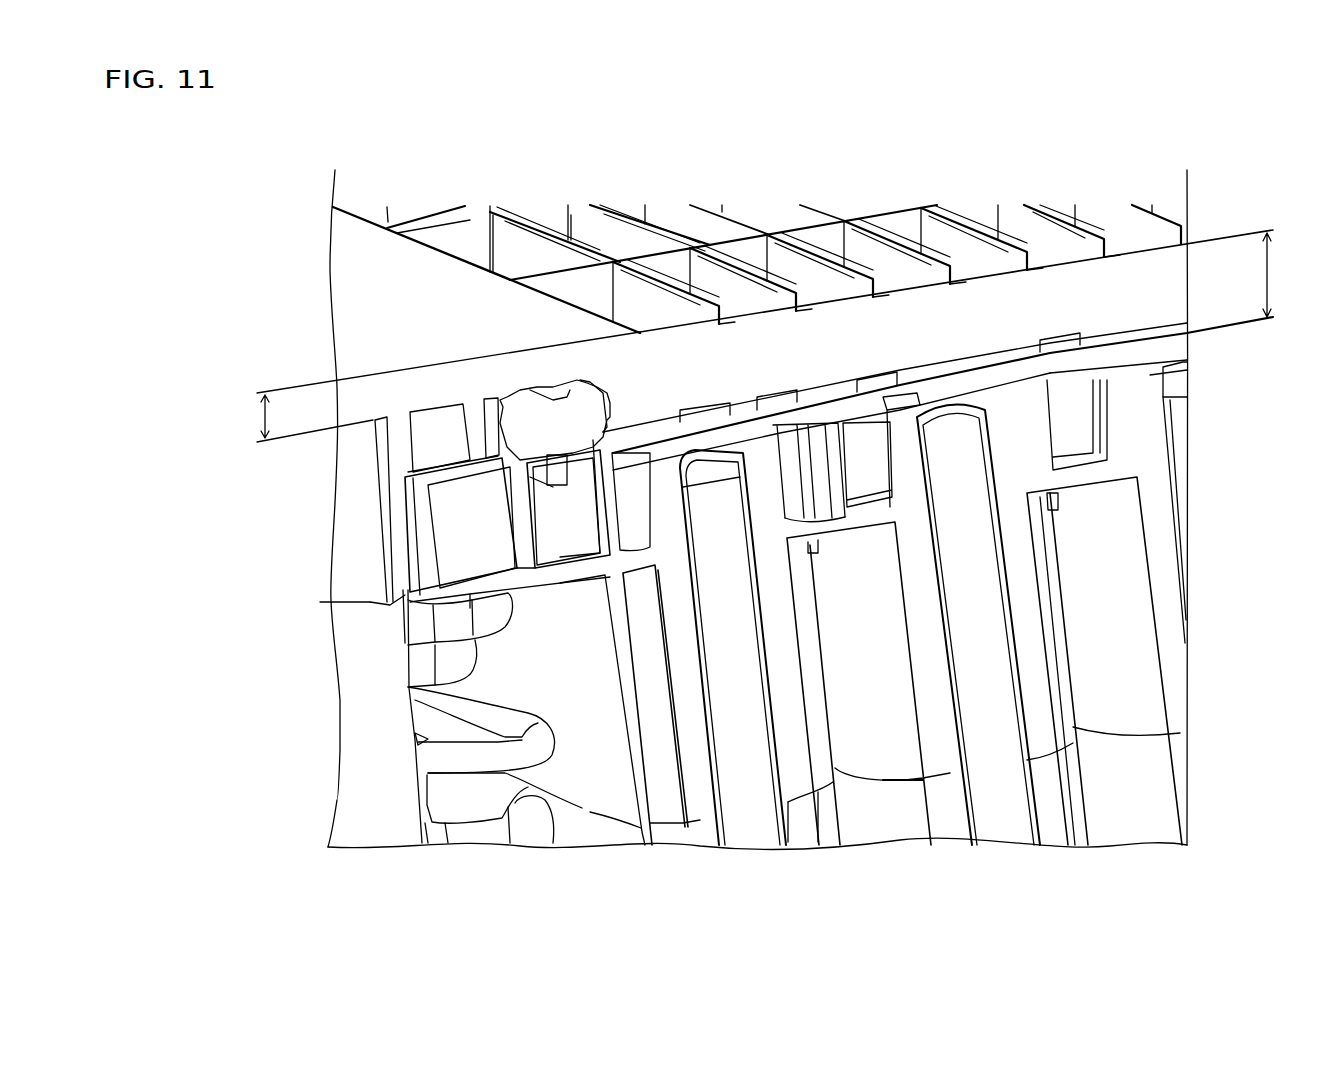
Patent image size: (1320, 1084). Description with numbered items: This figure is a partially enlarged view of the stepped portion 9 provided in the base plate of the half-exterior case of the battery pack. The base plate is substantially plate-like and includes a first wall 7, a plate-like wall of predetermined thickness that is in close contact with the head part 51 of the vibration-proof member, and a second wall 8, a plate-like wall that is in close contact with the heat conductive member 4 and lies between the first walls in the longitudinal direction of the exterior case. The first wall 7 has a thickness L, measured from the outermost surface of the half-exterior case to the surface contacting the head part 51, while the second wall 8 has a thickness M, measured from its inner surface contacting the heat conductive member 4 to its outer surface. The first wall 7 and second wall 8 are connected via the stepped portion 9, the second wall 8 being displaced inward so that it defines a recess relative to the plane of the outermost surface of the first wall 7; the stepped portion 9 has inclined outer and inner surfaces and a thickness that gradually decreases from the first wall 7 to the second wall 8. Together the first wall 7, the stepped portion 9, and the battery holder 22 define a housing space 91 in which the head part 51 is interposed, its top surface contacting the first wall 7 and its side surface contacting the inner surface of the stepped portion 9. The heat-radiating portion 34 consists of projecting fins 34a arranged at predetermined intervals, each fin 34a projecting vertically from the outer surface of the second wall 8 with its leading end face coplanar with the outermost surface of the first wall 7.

The heat conductive member 4 is at (1135, 350).
The first wall 7 is at (477, 368).
The second wall 8 is at (1033, 305).
The stepped portion 9 is at (633, 360).
The battery holder 22 is at (802, 778).
The heat-radiating portion 34 is at (835, 217).
The fin 34a is at (957, 237).
The head part 51 is at (553, 413).
The housing space 91 is at (502, 397).
The thickness of first wall L is at (303, 418).
The thickness of second wall M is at (1282, 275).